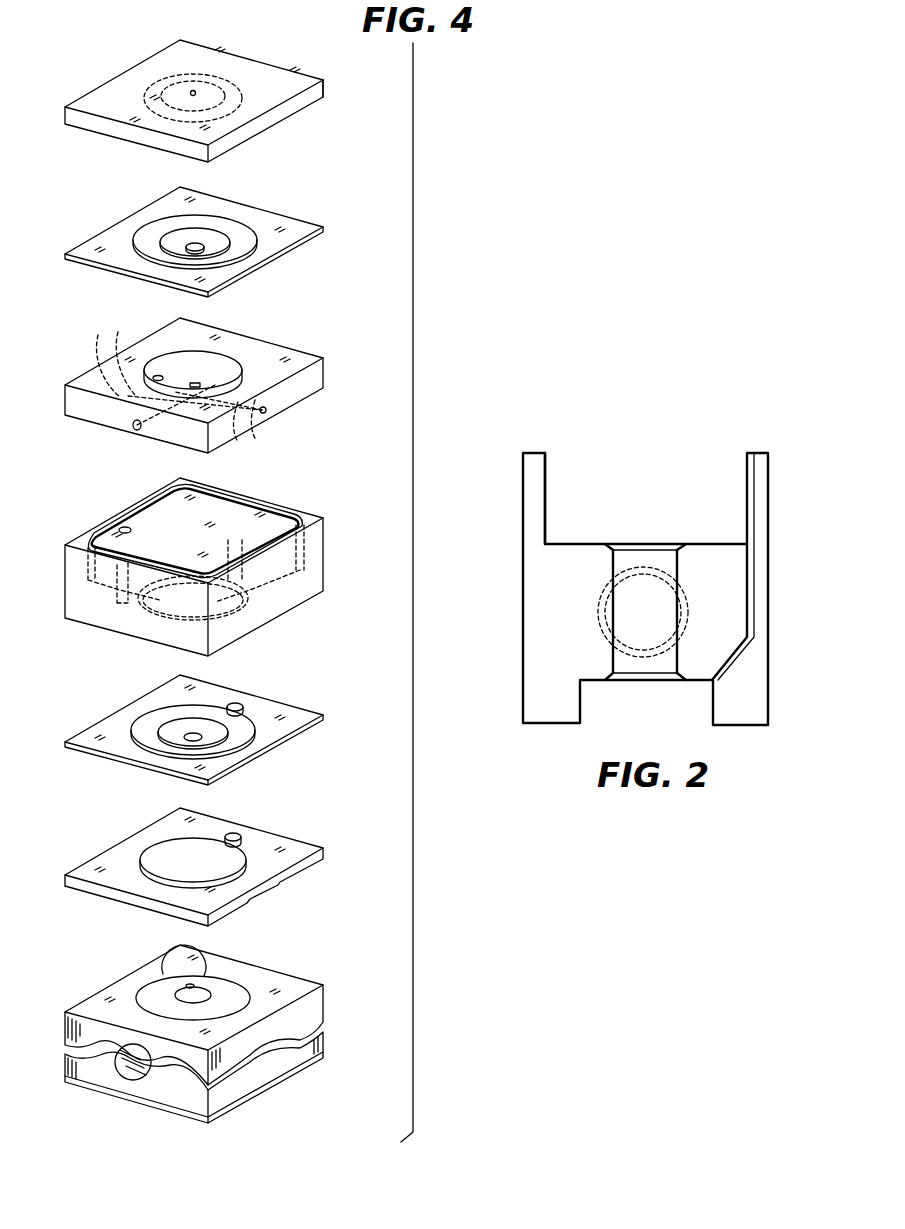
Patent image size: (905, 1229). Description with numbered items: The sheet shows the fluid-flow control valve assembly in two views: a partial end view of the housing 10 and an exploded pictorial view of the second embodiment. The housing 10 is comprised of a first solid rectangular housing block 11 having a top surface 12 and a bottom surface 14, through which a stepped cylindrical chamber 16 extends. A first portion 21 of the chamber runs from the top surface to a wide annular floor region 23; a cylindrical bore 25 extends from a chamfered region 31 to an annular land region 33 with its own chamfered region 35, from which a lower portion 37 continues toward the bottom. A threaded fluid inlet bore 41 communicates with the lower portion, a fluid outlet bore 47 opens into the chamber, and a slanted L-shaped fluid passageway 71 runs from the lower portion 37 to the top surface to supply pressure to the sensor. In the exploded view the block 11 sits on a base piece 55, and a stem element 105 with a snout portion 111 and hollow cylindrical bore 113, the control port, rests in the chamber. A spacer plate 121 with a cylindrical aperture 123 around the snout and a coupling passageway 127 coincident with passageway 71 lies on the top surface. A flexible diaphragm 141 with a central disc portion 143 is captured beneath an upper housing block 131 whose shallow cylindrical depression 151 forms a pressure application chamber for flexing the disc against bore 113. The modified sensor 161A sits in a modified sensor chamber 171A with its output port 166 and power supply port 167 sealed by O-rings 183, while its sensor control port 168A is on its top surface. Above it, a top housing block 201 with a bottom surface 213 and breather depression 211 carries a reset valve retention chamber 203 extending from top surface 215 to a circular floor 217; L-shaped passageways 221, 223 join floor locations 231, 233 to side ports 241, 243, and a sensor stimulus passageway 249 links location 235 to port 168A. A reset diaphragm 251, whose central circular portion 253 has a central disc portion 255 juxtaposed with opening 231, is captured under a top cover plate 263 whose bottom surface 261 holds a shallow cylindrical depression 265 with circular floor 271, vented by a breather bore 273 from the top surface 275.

In FIG. 4, the housing 10 is at (310, 1002).
In FIG. 4, the top surface 12 is at (300, 985).
In FIG. 2, the top surface 12 is at (534, 452).
In FIG. 4, the bottom surface 14 is at (305, 1060).
In FIG. 2, the bottom surface 14 is at (748, 726).
In FIG. 4, the stepped cylindrical chamber 16 is at (165, 962).
In FIG. 2, the stepped cylindrical chamber 16 is at (688, 499).
In FIG. 2, the first portion of chamber 21 is at (546, 472).
In FIG. 2, the annular floor region 23 is at (583, 543).
In FIG. 2, the cylindrical bore 25 is at (677, 563).
In FIG. 2, the chamfered region 31 is at (603, 548).
In FIG. 2, the annular land region 33 is at (590, 684).
In FIG. 2, the chamfered region 35 is at (680, 675).
In FIG. 2, the lower portion of chamber 37 is at (712, 711).
In FIG. 4, the fluid inlet bore 41 is at (128, 1078).
In FIG. 2, the fluid inlet bore 41 is at (643, 612).
In FIG. 2, the fluid outlet bore 47 is at (643, 612).
In FIG. 4, the base plate 55 is at (245, 1100).
In FIG. 2, the slanted L-shaped fluid passageway 71 is at (755, 475).
In FIG. 2, the housing block 11 is at (760, 680).
In FIG. 4, the stem element 105 is at (232, 995).
In FIG. 4, the snout portion 111 is at (176, 995).
In FIG. 4, the hollow cylindrical bore 113 is at (191, 984).
In FIG. 4, the spacer plate 121 is at (310, 860).
In FIG. 4, the cylindrical aperture 123 is at (170, 865).
In FIG. 4, the coupling fluid communication passageway 127 is at (243, 842).
In FIG. 4, the upper housing block 131 is at (310, 578).
In FIG. 4, the flexible diaphragm 141 is at (295, 715).
In FIG. 4, the central disc portion 143 is at (193, 735).
In FIG. 4, the shallow cylindrical depression 151 is at (240, 620).
In FIG. 4, the modified sensor 161A is at (206, 508).
In FIG. 4, the output port 166 is at (133, 560).
In FIG. 4, the power supply port 167 is at (300, 545).
In FIG. 4, the sensor control port 168A is at (124, 528).
In FIG. 4, the modified sensor chamber 171A is at (297, 535).
In FIG. 4, the O-rings 183 is at (105, 528).
In FIG. 4, the top housing block 201 is at (320, 372).
In FIG. 4, the reset valve retention chamber 203 is at (181, 367).
In FIG. 4, the breather depression 211 is at (255, 427).
In FIG. 4, the bottom surface 213 is at (185, 448).
In FIG. 4, the top surface 215 is at (300, 356).
In FIG. 4, the circular floor 217 is at (228, 366).
In FIG. 4, the L-shaped fluid communication passageway 221 is at (165, 432).
In FIG. 4, the L-shaped fluid communication passageway 223 is at (240, 444).
In FIG. 4, the floor location 231 is at (160, 377).
In FIG. 4, the floor location 233 is at (200, 382).
In FIG. 4, the floor location 235 is at (158, 370).
In FIG. 4, the side port 241 is at (133, 428).
In FIG. 4, the side port 243 is at (270, 410).
In FIG. 4, the sensor stimulus fluid communication passageway 249 is at (102, 348).
In FIG. 4, the flexible diaphragm 251 is at (300, 227).
In FIG. 4, the central circular portion 253 is at (215, 248).
In FIG. 4, the central disc portion 255 is at (193, 247).
In FIG. 4, the bottom surface 261 is at (110, 135).
In FIG. 4, the top cover plate 263 is at (318, 92).
In FIG. 4, the shallow cylindrical depression 265 is at (224, 85).
In FIG. 4, the circular floor 271 is at (170, 82).
In FIG. 4, the breather bore 273 is at (193, 92).
In FIG. 4, the top surface 275 is at (297, 80).